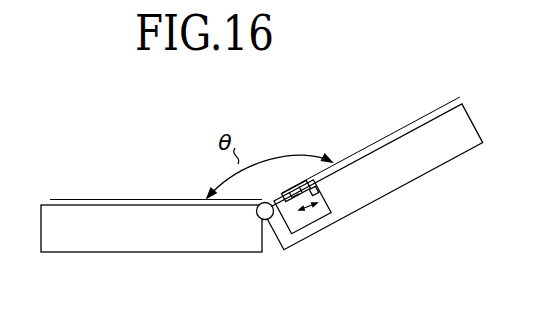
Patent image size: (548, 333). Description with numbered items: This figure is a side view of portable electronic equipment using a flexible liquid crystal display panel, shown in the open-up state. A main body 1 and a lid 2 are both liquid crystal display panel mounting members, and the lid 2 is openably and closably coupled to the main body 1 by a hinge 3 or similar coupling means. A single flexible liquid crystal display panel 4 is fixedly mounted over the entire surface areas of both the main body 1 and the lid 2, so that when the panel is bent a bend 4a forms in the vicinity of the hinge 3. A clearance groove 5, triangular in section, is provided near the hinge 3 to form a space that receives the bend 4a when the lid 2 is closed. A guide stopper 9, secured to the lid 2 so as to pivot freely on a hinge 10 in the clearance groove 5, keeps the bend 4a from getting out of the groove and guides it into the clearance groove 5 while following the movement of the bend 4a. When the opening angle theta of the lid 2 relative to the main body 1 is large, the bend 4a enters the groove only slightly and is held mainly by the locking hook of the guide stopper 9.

The main body 1 is at (135, 241).
The lid 2 is at (432, 168).
The hinge 3 is at (262, 221).
The flexible liquid crystal display panel 4 is at (110, 198).
The bend 4a is at (270, 181).
The clearance groove 5 is at (306, 222).
The guide stopper 9 is at (304, 184).
The hinge 10 is at (317, 190).